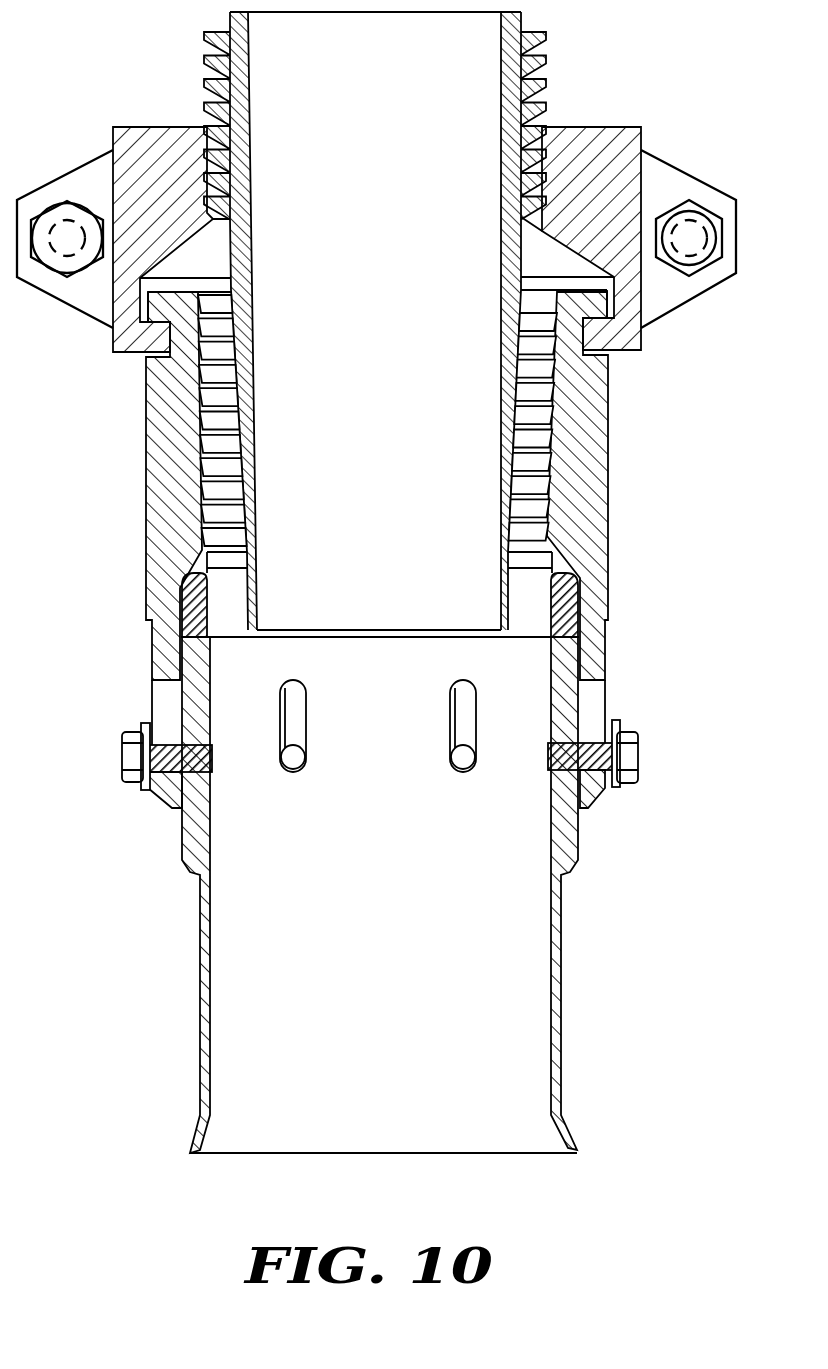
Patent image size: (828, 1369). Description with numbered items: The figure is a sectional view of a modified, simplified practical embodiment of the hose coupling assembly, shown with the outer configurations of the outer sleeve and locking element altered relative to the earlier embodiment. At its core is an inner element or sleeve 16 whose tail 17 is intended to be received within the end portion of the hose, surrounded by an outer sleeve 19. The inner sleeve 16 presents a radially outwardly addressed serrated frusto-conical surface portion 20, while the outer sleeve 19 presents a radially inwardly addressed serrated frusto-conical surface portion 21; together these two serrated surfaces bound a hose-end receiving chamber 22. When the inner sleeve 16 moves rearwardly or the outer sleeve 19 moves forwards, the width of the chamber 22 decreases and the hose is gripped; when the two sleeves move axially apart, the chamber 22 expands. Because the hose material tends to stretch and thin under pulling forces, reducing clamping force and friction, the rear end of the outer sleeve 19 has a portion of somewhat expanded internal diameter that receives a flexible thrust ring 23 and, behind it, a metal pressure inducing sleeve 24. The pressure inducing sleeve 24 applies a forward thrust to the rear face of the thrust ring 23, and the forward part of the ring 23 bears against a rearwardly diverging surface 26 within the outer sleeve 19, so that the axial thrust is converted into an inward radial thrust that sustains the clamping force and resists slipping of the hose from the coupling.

The inner sleeve 16 is at (248, 166).
The tail 17 is at (500, 568).
The outer sleeve 19 is at (610, 578).
The serrated frusto-conical surface portion 20 is at (238, 355).
The serrated frusto-conical surface portion 21 is at (200, 465).
The hose-end receiving chamber 22 is at (232, 473).
The flexible thrust ring 23 is at (207, 627).
The pressure inducing sleeve 24 is at (182, 840).
The rearwardly diverging surface 26 is at (188, 576).